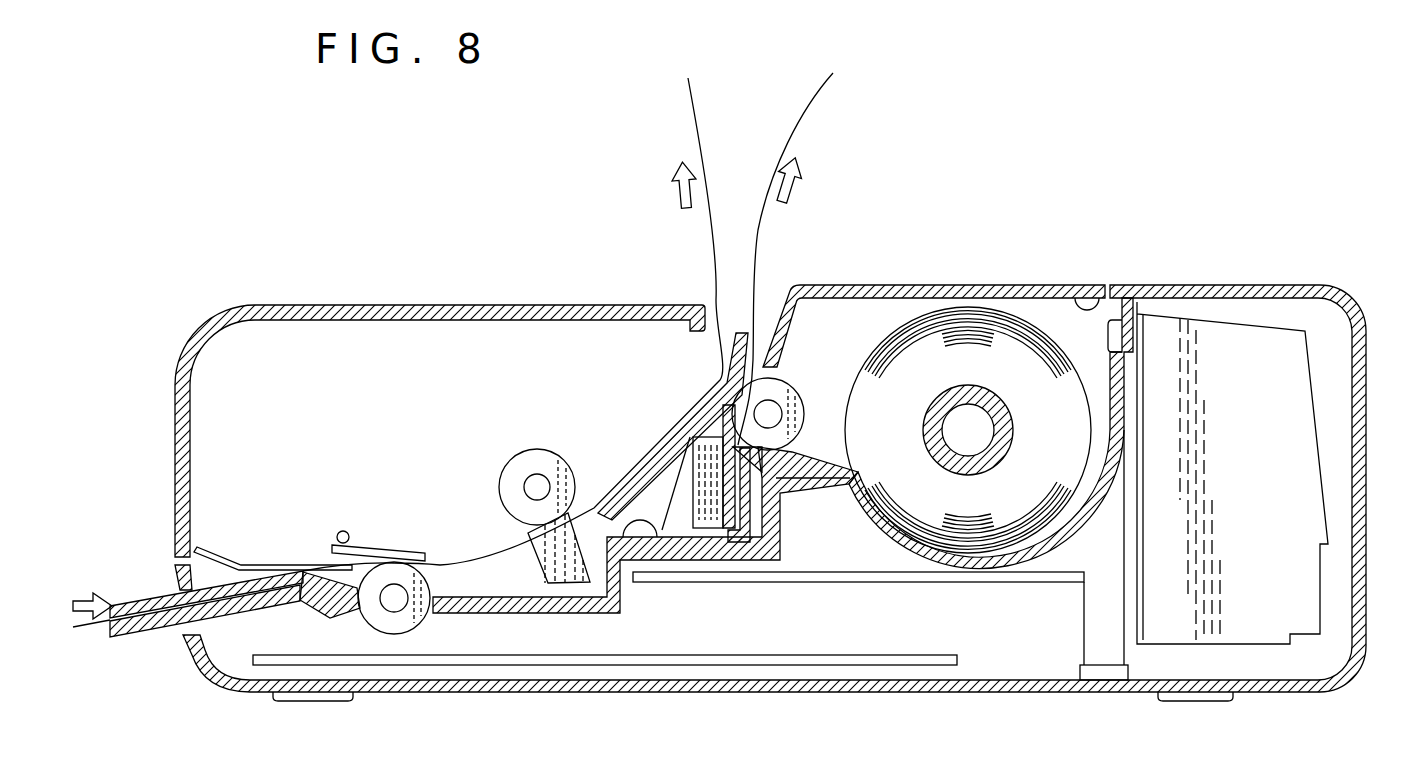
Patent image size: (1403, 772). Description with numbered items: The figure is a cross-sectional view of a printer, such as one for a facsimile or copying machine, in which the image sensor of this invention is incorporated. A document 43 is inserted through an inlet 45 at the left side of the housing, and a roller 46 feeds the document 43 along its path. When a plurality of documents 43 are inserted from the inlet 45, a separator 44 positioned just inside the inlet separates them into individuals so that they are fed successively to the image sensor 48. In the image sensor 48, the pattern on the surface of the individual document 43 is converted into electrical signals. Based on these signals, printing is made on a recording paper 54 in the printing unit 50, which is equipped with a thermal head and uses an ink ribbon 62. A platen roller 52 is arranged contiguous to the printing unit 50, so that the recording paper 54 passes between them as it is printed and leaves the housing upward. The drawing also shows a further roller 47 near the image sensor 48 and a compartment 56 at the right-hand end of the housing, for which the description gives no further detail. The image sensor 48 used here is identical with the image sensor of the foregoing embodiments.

The document 43 is at (690, 118).
The separator 44 is at (372, 545).
The inlet 45 is at (153, 632).
The roller 46 is at (430, 622).
The roller 47 is at (530, 462).
The image sensor 48 is at (535, 560).
The printing unit 50 is at (695, 508).
The platen roller 52 is at (792, 385).
The recording paper 54 is at (800, 128).
The battery 56 is at (1240, 342).
The ink ribbon 62 is at (740, 440).